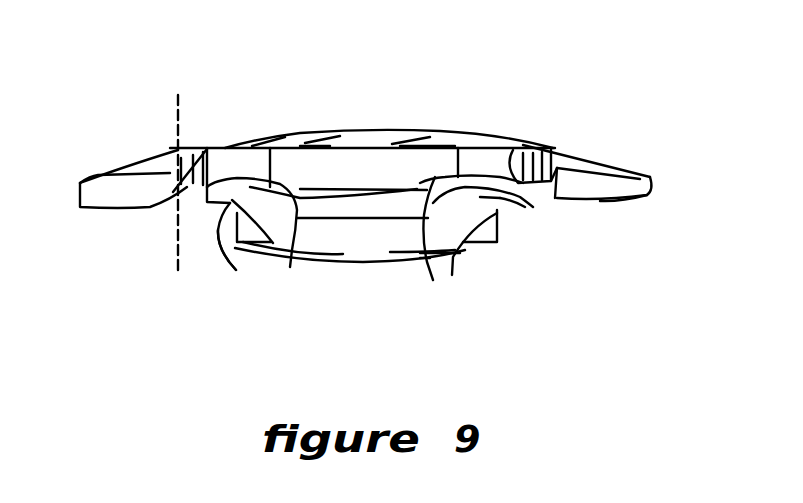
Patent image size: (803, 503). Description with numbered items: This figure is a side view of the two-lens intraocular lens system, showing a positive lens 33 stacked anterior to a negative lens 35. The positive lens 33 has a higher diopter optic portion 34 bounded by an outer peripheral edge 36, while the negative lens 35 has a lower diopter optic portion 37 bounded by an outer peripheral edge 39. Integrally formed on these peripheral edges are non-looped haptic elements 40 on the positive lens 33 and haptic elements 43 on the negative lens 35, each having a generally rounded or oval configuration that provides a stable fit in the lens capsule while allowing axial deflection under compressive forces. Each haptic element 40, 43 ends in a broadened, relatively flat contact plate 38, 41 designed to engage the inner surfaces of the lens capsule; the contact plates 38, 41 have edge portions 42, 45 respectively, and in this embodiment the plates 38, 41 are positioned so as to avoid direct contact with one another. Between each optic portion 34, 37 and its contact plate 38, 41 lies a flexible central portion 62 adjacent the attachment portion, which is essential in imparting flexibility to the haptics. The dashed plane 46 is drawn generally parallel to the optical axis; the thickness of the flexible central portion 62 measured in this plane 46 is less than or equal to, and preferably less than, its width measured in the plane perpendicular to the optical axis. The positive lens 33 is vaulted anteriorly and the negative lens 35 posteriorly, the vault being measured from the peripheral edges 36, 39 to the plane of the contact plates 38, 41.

The positive lens 33 is at (365, 132).
The higher diopter optic portion 34 is at (437, 132).
The negative lens 35 is at (363, 262).
The outer peripheral edge 36 is at (490, 147).
The lower diopter optic portion 37 is at (452, 275).
The contact plate 38 is at (617, 170).
The outer peripheral edge 39 is at (497, 242).
The haptic element 40 is at (620, 203).
The contact plate 41 is at (525, 207).
The edge portion 42 is at (130, 207).
The haptic element 43 is at (570, 148).
The edge portion 45 is at (236, 270).
The plane 46— 46 is at (180, 188).
The flexible central portion 62 is at (207, 148).